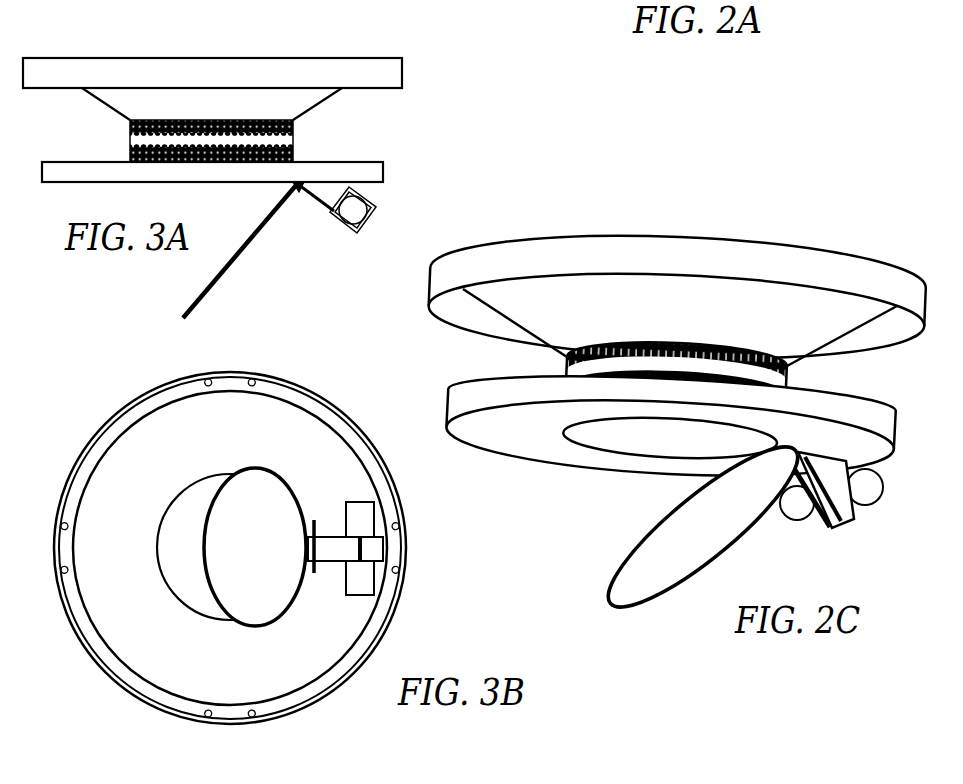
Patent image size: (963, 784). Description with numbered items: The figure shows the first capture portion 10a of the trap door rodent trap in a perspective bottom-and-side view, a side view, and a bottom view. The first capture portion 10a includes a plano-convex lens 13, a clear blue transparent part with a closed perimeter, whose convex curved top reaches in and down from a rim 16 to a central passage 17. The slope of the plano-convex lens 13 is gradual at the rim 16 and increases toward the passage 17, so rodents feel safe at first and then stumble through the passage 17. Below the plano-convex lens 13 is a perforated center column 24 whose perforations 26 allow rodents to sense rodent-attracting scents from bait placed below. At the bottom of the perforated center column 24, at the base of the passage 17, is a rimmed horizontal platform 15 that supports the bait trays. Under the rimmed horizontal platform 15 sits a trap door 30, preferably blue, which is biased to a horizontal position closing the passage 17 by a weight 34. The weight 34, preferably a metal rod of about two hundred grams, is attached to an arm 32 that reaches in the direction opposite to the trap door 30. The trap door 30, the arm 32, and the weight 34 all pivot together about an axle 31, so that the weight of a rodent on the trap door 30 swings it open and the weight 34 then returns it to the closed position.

In FIG. 3A, the first capture portion 10a is at (312, 26).
In FIG. 3B, the first capture portion 10a is at (105, 360).
In FIG. 2C, the first capture portion 10a is at (744, 163).
In FIG. 3A, the plano-convex lens 13 is at (148, 113).
In FIG. 3B, the plano-convex lens 13 is at (116, 508).
In FIG. 2C, the plano-convex lens 13 is at (543, 317).
In FIG. 3A, the rimmed horizontal platform 15 is at (352, 175).
In FIG. 2C, the rimmed horizontal platform 15 is at (506, 443).
In FIG. 3A, the rim 16 is at (363, 70).
In FIG. 3B, the rim 16 is at (297, 385).
In FIG. 2C, the rim 16 is at (585, 254).
In FIG. 3B, the passage 17 is at (168, 560).
In FIG. 2C, the passage 17 is at (666, 445).
In FIG. 3A, the perforated center column 24 is at (228, 135).
In FIG. 2C, the perforated center column 24 is at (788, 372).
In FIG. 3A, the perforations 26 is at (293, 125).
In FIG. 3A, the trap door 30 is at (230, 268).
In FIG. 3B, the trap door 30 is at (255, 547).
In FIG. 2C, the trap door 30 is at (703, 527).
In FIG. 3A, the axle 31 is at (290, 188).
In FIG. 3B, the axle 31 is at (315, 573).
In FIG. 3A, the arm 32 is at (313, 205).
In FIG. 3B, the arm 32 is at (330, 552).
In FIG. 2C, the arm 32 is at (797, 520).
In FIG. 3A, the weight 34 is at (353, 208).
In FIG. 3B, the weight 34 is at (350, 530).
In FIG. 2C, the weight 34 is at (866, 490).